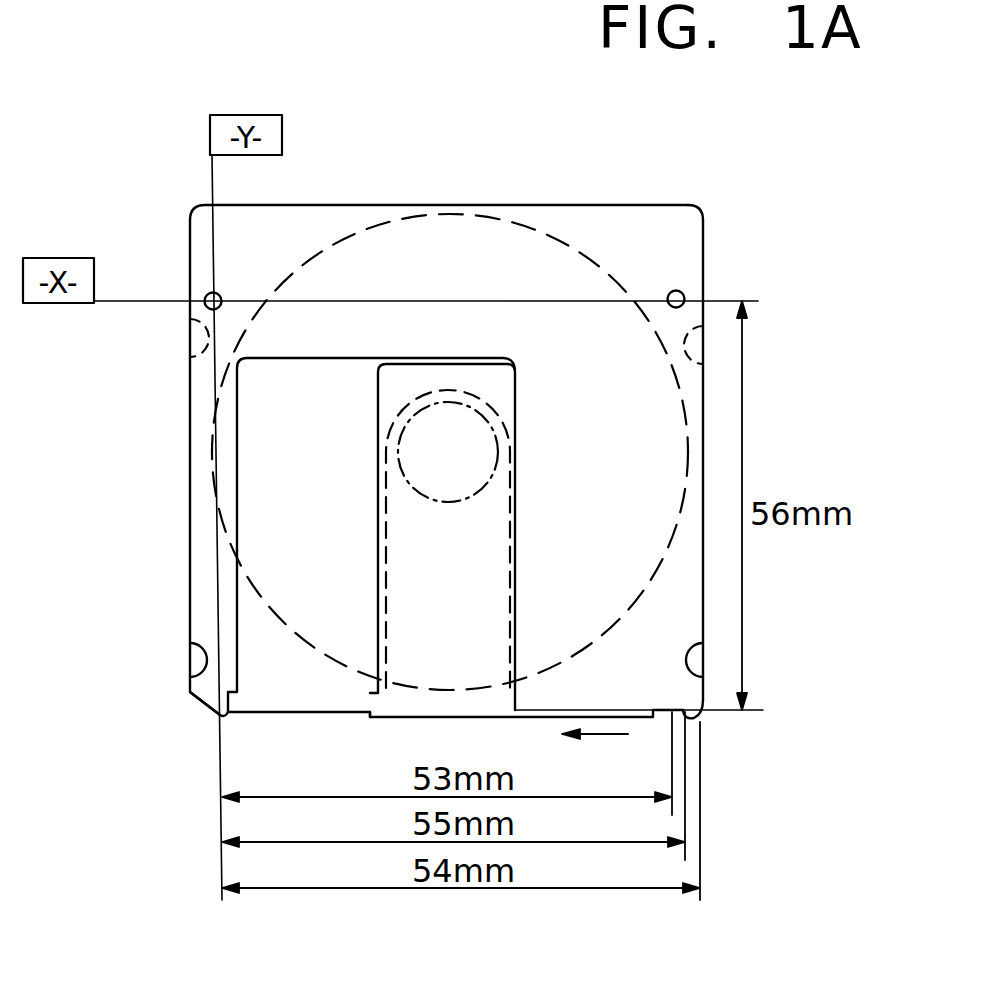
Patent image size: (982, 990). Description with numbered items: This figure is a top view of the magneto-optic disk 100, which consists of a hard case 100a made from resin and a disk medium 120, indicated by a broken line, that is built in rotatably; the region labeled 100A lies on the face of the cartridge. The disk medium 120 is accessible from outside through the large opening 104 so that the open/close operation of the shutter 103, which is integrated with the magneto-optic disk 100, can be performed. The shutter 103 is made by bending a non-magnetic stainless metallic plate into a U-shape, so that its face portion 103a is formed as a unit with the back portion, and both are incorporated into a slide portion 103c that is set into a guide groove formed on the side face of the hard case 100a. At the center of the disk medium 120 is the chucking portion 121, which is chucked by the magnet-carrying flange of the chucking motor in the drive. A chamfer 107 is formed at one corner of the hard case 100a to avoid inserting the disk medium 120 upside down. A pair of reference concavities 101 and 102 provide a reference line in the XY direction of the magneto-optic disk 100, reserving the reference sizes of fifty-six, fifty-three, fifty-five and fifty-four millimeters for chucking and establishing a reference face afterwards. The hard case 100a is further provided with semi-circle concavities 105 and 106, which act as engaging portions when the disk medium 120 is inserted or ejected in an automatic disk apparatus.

The magneto-optic disk 100 is at (399, 192).
The hard case 100a is at (690, 203).
The chassis plate surface 100A is at (428, 680).
The reference concavity 101 is at (205, 293).
The reference concavity 102 is at (684, 293).
The shutter 103 is at (420, 555).
The face portion 103a is at (385, 402).
The slide portion 103c is at (670, 713).
The large opening 104 is at (512, 440).
The semi-circle concavity 105 is at (190, 637).
The semi-circle concavity 106 is at (703, 632).
The chamfer 107 is at (210, 708).
The disk medium 120 is at (690, 446).
The chucking portion 121 is at (450, 402).